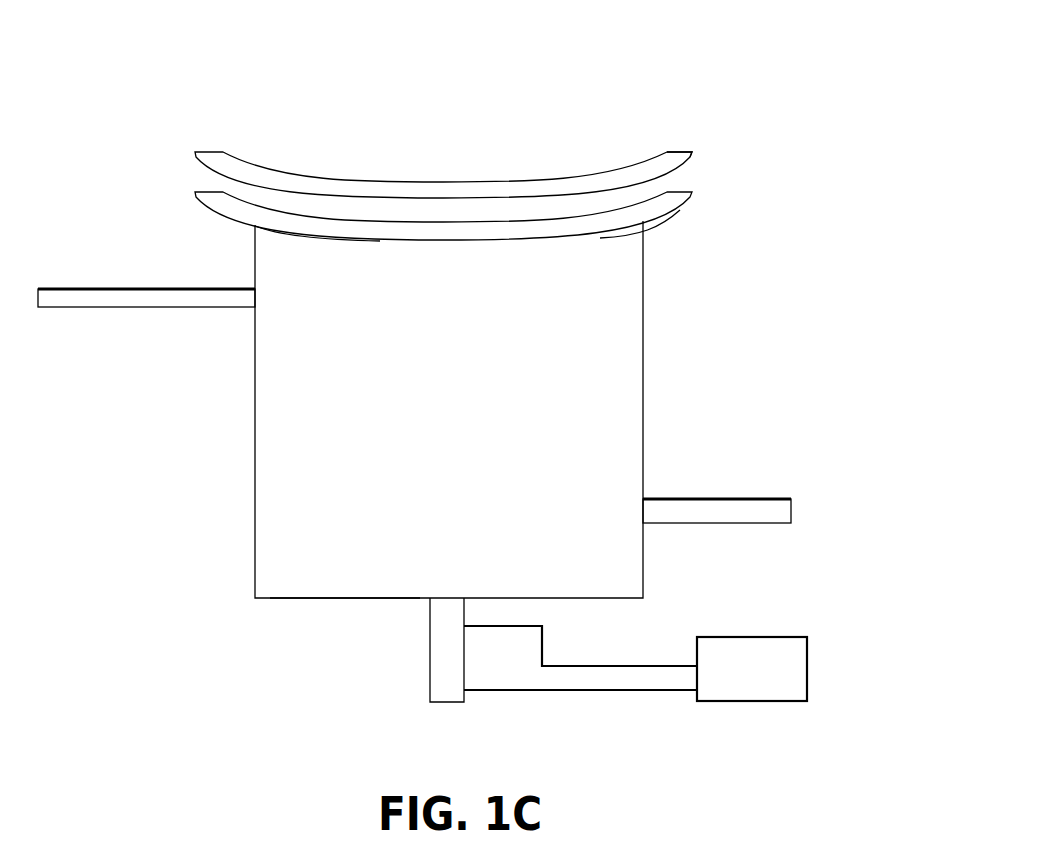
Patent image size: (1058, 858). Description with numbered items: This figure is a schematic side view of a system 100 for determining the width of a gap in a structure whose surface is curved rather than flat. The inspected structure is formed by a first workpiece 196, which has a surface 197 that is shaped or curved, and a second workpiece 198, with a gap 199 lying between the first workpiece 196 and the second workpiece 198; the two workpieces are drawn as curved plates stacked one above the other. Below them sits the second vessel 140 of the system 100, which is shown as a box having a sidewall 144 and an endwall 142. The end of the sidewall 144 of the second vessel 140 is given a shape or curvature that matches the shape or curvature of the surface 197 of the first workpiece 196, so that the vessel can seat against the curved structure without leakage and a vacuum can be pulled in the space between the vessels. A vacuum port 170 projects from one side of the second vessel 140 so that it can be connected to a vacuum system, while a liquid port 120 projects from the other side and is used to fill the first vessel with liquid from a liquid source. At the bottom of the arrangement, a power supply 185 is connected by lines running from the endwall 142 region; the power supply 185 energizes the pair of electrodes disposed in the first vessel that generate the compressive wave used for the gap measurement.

The system 100 is at (463, 66).
The second workpiece 198 is at (205, 147).
The gap 199 is at (205, 180).
The first workpiece 196 is at (686, 184).
The surface 197 is at (623, 228).
The second vessel 140 is at (643, 421).
The sidewall 144 is at (336, 231).
The endwall 142 is at (310, 599).
The vacuum port 170 is at (147, 288).
The liquid port 120 is at (758, 499).
The power supply 185 is at (767, 684).